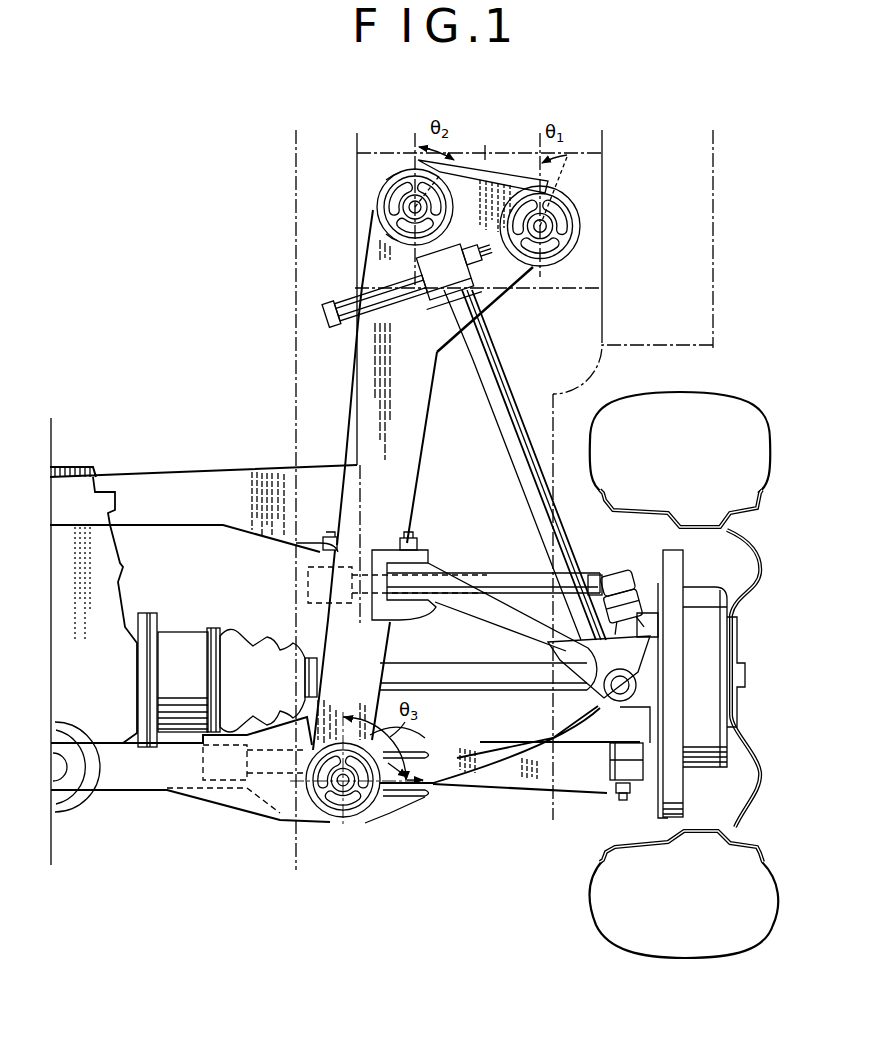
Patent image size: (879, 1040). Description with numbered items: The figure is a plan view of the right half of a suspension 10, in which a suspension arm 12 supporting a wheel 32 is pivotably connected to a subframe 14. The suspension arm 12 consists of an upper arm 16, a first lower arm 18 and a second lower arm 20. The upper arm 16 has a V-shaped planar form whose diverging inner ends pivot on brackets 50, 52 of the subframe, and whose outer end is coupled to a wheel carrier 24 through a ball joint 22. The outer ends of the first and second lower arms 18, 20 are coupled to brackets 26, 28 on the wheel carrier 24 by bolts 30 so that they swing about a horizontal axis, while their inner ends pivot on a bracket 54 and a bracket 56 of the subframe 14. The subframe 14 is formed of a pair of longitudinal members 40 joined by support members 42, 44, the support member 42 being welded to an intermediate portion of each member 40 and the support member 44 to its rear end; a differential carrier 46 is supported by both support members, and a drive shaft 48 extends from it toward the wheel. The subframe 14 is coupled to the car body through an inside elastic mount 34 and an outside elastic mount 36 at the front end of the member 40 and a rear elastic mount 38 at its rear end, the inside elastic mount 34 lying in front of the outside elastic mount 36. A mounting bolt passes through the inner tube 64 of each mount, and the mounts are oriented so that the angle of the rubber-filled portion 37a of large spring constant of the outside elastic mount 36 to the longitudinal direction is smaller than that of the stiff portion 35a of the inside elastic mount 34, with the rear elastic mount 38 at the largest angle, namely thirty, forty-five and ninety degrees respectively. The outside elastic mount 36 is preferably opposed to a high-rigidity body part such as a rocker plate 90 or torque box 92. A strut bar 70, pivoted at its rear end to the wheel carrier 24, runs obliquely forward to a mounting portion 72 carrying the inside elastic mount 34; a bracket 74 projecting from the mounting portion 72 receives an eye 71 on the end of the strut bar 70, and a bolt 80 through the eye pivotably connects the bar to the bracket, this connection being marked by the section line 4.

The section line 4 is at (392, 152).
The suspension 10 is at (684, 653).
The suspension arm 12 is at (515, 626).
The subframe 14 is at (445, 669).
The upper arm 16 is at (468, 600).
The first lower arm 18 is at (477, 577).
The second lower arm 20 is at (583, 777).
The ball joint 22 is at (543, 690).
The wheel carrier 24 is at (690, 652).
The bracket 26 is at (628, 575).
The bracket 28 is at (635, 765).
The bolts 30 is at (603, 575).
The wheel 32 is at (753, 406).
The inside elastic mount 34 is at (395, 200).
The portion having large spring constant 35a is at (458, 158).
The outside elastic mount 36 is at (579, 232).
The portion filled with rubber 37a is at (570, 200).
The rear elastic mount 38 is at (373, 787).
The members 40 is at (383, 397).
The support member 42 is at (163, 487).
The support member 44 is at (190, 782).
The differential carrier 46 is at (110, 570).
The drive shaft 48 is at (445, 683).
The bracket 50 is at (418, 557).
The bracket 52 is at (388, 803).
The bracket 54 is at (317, 560).
The bracket 56 is at (242, 797).
The inner tube 64 is at (390, 182).
The strut bar 70 is at (490, 380).
The eye 71 is at (432, 305).
The mounting portion 72 is at (380, 216).
The bracket 74 is at (490, 283).
The bolt 80 is at (350, 310).
The rocker plate 90 is at (703, 310).
The torque box 92 is at (573, 277).